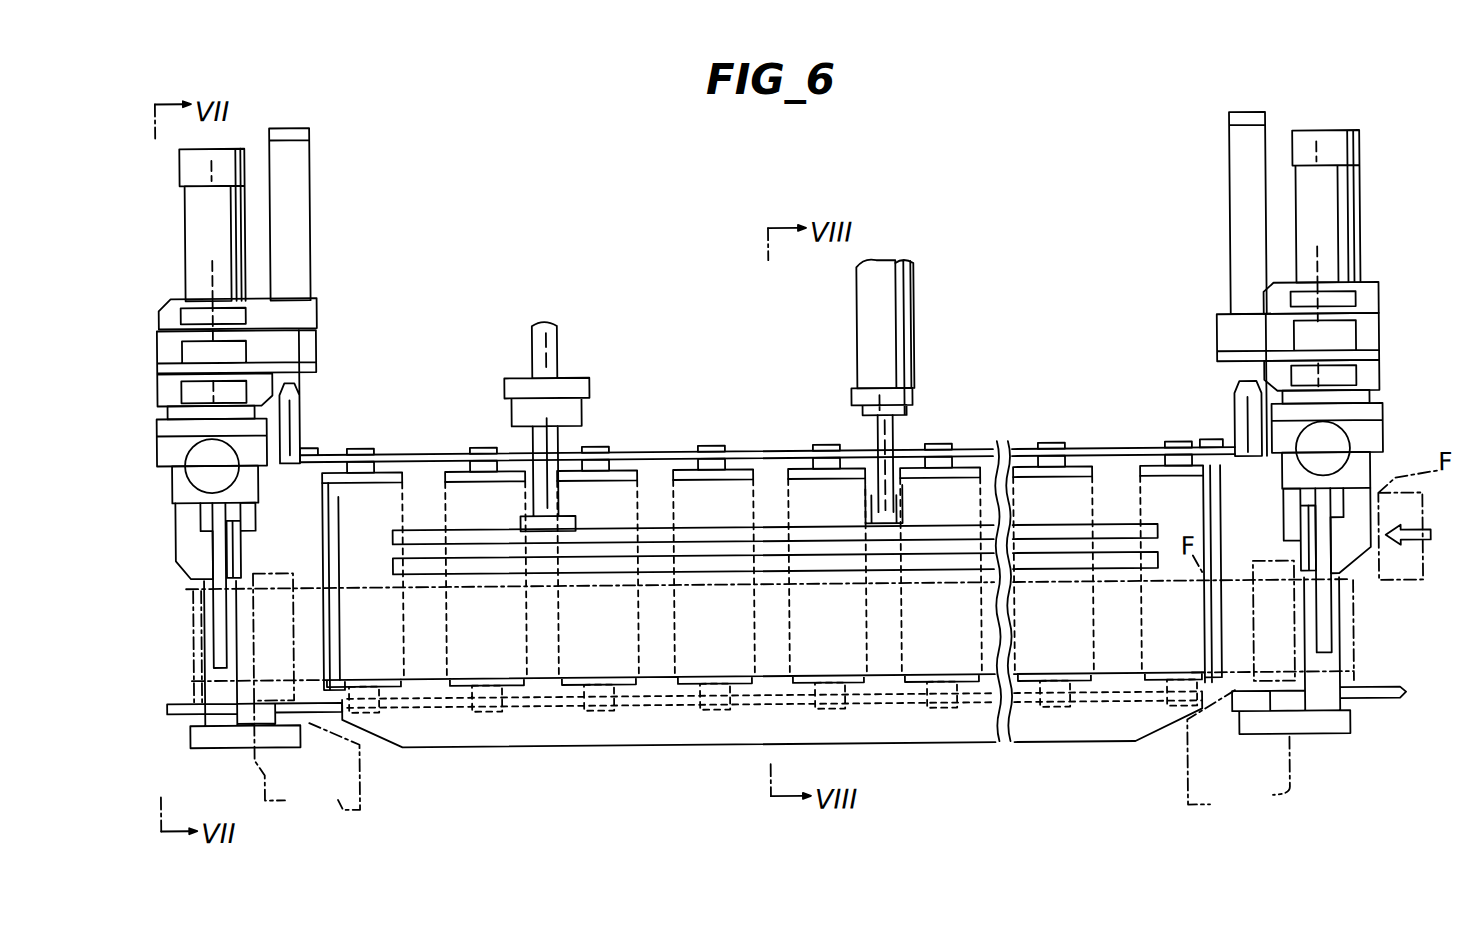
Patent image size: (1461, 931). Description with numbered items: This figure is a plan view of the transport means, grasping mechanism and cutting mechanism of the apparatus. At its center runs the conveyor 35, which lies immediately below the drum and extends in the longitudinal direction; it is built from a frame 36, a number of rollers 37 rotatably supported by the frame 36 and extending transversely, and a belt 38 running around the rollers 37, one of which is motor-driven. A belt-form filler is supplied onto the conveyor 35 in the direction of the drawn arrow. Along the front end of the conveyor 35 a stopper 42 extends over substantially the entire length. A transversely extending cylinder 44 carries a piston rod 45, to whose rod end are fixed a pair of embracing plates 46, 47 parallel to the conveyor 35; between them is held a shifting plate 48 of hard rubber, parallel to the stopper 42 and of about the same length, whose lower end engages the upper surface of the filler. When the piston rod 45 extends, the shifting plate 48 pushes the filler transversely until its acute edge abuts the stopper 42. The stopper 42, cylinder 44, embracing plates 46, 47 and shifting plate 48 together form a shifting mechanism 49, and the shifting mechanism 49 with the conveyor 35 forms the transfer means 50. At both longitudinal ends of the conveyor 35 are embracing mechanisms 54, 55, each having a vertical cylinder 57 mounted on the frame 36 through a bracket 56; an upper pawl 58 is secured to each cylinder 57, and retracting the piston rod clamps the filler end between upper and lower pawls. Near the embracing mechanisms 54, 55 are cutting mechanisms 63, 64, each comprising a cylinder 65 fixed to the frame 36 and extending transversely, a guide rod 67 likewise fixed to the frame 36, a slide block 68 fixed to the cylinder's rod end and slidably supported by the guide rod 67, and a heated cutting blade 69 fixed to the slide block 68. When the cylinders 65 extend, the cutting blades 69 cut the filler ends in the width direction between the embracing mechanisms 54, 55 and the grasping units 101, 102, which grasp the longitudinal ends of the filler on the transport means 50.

The conveyor 35 is at (1018, 451).
The frame 36 is at (974, 460).
The rollers 37 is at (788, 464).
The belt 38 is at (660, 491).
The stopper 42 is at (891, 738).
The cylinder 44 is at (862, 303).
The piston rod 45 is at (875, 450).
The embracing plate 46 is at (719, 539).
The embracing plate 47 is at (710, 570).
The shifting plate 48 is at (829, 557).
The shifting mechanism 49 is at (919, 354).
The transfer means 50 is at (976, 355).
The embracing mechanism 54 is at (240, 486).
The embracing mechanism 55 is at (1287, 477).
The bracket 56 is at (160, 446).
The vertical cylinder 57 is at (194, 480).
The upper pawl 58 is at (214, 566).
The cutting mechanism 63 is at (178, 275).
The cutting mechanism 64 is at (1360, 274).
The cylinder 65 is at (195, 213).
The guide rod 67 is at (212, 694).
The slide block 68 is at (184, 527).
The cutting blade 69 is at (238, 547).
The grasping unit 101 is at (358, 777).
The grasping unit 102 is at (1184, 772).